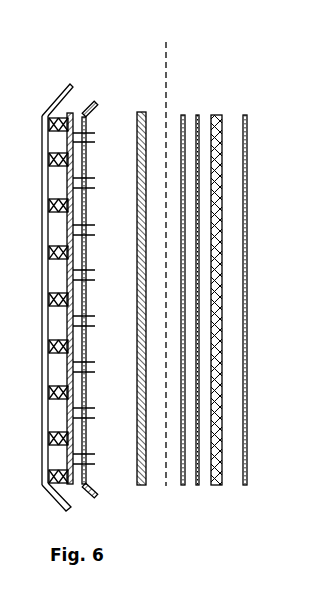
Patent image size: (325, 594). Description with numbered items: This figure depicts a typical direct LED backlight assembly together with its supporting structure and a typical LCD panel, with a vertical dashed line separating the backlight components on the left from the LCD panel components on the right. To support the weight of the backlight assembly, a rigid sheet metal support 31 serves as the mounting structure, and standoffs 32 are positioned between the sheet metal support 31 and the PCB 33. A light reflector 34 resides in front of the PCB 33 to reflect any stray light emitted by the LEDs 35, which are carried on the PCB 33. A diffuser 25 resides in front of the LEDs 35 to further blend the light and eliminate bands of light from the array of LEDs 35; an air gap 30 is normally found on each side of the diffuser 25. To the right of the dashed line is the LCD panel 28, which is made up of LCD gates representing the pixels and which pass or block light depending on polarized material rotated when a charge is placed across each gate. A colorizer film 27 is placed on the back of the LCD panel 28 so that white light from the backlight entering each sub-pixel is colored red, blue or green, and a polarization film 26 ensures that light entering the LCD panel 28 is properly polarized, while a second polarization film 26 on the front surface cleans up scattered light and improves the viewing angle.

The diffuser 25 is at (151, 493).
The polarization film 26 is at (201, 496).
The colorizer film 27 is at (184, 105).
The LCD panel 28 is at (224, 105).
The air gap 30 is at (69, 46).
The sheet metal support 31 is at (38, 288).
The standoffs 32 is at (44, 121).
The PCB 33 is at (73, 494).
The light reflector 34 is at (100, 94).
The LEDs 35 is at (106, 133).